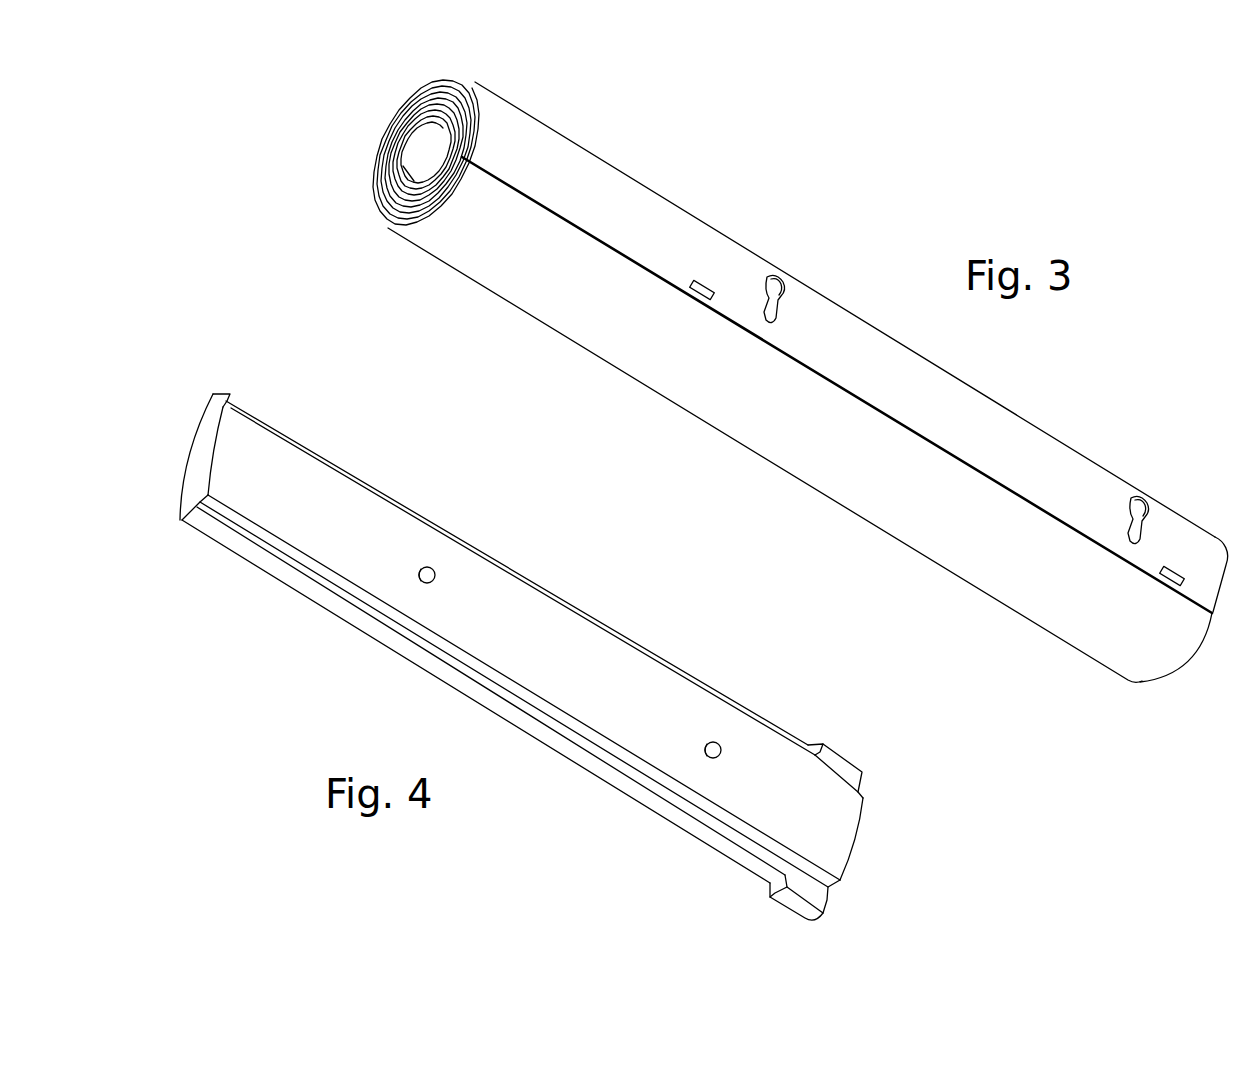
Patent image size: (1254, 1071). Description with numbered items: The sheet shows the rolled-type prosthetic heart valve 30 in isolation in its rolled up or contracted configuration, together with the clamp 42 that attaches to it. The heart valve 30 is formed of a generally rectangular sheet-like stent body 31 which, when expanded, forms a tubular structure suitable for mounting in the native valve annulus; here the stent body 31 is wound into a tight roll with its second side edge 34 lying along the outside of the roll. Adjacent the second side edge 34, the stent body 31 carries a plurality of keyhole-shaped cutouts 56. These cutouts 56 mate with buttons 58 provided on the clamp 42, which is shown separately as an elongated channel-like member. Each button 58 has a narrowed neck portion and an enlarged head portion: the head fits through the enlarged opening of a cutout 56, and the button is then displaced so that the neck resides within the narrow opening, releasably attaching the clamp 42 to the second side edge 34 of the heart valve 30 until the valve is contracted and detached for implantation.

In FIG. 3, the prosthetic heart valve 30 is at (330, 91).
In FIG. 3, the stent body 31 is at (615, 197).
In FIG. 3, the second side edge 34 is at (535, 203).
In FIG. 3, the keyhole-shaped cutouts 56 is at (783, 283).
In FIG. 4, the clamp 42 is at (612, 582).
In FIG. 4, the buttons 58 is at (435, 570).